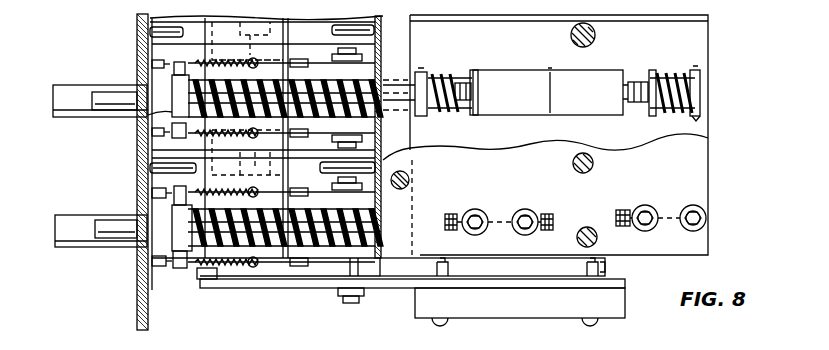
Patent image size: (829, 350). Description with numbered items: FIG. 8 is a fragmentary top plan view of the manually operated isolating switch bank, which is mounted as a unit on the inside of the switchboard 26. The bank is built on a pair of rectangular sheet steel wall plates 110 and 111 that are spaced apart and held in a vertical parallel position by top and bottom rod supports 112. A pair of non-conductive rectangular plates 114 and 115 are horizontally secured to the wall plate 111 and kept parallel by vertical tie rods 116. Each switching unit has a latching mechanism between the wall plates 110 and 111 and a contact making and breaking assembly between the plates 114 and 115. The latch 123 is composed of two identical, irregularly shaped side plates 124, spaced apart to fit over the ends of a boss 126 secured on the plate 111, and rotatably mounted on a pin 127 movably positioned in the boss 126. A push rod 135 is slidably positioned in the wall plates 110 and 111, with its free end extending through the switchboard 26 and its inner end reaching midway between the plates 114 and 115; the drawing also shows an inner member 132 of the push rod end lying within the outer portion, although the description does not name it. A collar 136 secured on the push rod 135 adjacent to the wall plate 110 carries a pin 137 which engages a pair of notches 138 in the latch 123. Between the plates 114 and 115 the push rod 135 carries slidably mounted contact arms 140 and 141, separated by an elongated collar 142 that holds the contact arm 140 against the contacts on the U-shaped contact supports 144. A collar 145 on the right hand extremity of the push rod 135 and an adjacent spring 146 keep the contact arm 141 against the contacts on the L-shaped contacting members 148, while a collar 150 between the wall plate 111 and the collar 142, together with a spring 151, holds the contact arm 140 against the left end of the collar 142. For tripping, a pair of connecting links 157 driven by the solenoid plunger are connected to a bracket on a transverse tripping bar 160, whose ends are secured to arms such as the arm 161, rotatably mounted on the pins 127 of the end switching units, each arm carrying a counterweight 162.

The switchboard 26 is at (128, 175).
The wall plate 110 is at (150, 320).
The wall plate 111 is at (383, 264).
The rod support 112 is at (148, 34).
The non-conductive rectangular plate 114 is at (705, 172).
The non-conductive rectangular plate 115 is at (697, 44).
The vertical tie rod 116 is at (571, 36).
The latch 123 is at (290, 287).
The side plate 124 is at (310, 64).
The boss 126 is at (367, 202).
The pin 127 is at (351, 304).
The inner arm 132 is at (115, 92).
The push rod 135 is at (60, 85).
The collar 136 is at (152, 116).
The pin 137 is at (177, 133).
The notch 138 is at (235, 55).
The contact arm 140 is at (474, 116).
The contact arm 141 is at (652, 68).
The elongated collar 142 is at (510, 75).
The U-shaped contact support 144 is at (505, 210).
The collar 145 is at (700, 120).
The spring 146 is at (667, 112).
The L-shaped contacting member 148 is at (668, 205).
The collar 150 is at (423, 116).
The spring 151 is at (455, 72).
The connecting link 157 is at (331, 30).
The transverse tripping bar 160 is at (218, 273).
The arm 161 is at (316, 289).
The counterweight 162 is at (512, 310).